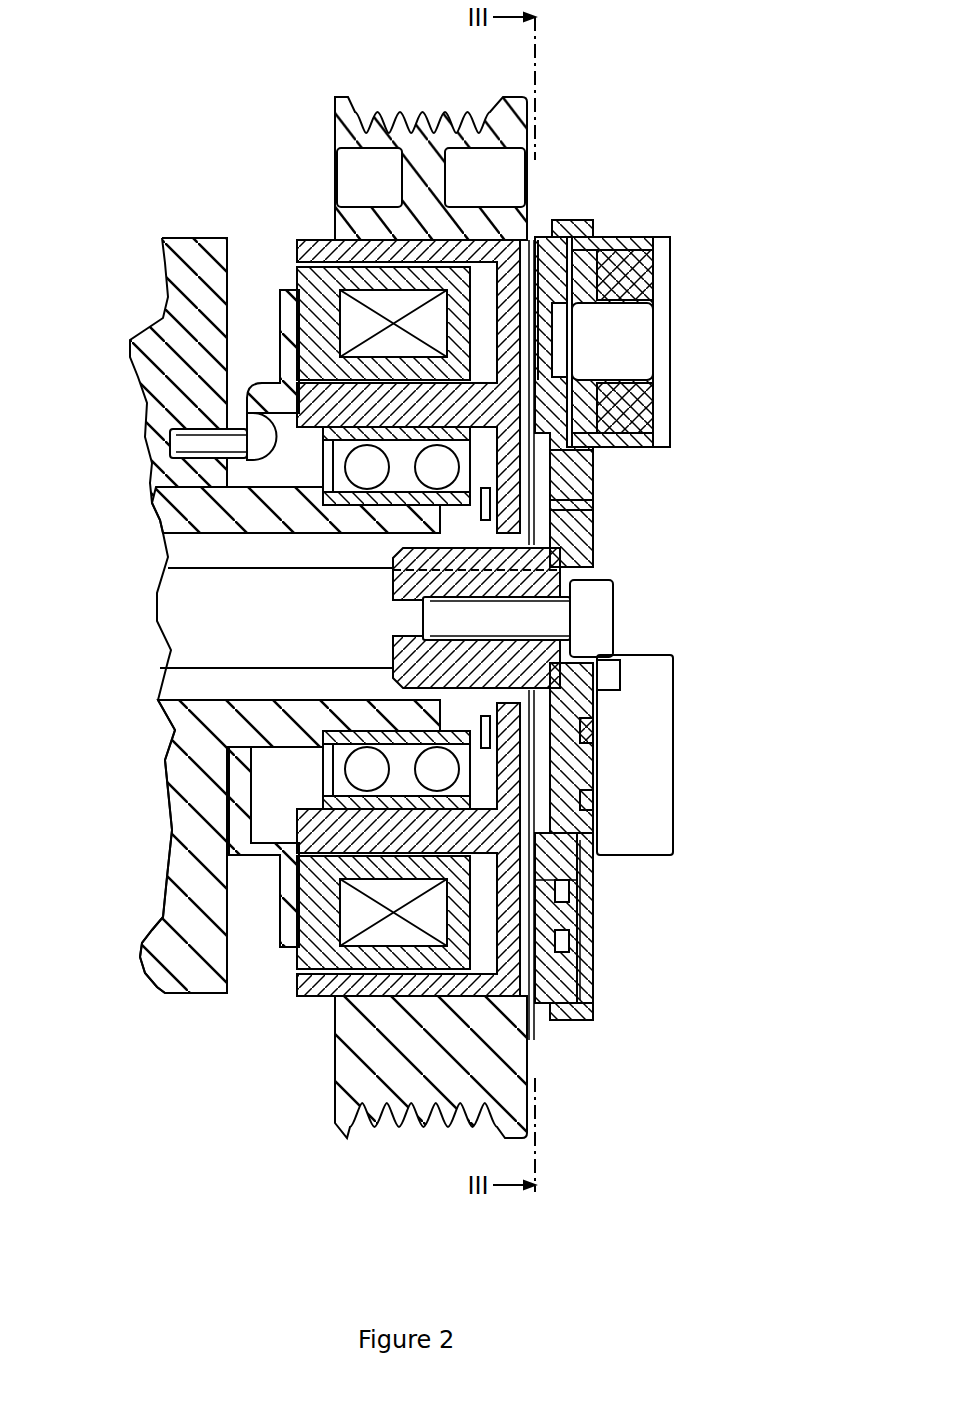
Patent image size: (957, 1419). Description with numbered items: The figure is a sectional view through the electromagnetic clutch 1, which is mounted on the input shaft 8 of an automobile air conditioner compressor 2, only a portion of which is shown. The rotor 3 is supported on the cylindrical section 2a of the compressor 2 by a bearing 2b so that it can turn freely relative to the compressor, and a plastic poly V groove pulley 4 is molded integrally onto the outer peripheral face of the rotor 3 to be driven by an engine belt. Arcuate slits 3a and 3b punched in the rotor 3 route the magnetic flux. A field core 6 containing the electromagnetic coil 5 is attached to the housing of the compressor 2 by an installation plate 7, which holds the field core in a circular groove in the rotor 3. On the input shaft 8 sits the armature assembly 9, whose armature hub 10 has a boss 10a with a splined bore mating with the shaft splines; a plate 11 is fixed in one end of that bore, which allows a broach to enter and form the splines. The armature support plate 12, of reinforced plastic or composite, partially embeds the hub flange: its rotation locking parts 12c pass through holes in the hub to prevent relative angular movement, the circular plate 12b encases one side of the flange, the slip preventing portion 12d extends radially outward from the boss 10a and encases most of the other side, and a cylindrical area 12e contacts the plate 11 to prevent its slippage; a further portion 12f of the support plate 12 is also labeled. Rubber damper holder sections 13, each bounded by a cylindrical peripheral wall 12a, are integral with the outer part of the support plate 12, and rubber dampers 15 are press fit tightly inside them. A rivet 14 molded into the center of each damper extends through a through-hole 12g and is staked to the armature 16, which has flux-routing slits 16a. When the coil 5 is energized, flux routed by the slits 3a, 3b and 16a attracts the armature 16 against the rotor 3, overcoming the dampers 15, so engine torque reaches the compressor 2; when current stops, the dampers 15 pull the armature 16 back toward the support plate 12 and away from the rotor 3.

The electromagnetic clutch 1 is at (637, 91).
The compressor 2 is at (180, 252).
The cylindrical section 2a is at (290, 520).
The bearing 2b is at (320, 495).
The rotor 3 is at (330, 238).
The slit 3a is at (593, 890).
The slit 3b is at (593, 992).
The poly V groove pulley 4 is at (345, 100).
The electromagnetic coil 5 is at (307, 345).
The field core 6 is at (273, 1027).
The installation plate 7 is at (300, 398).
The input shaft 8 is at (195, 616).
The armature assembly 9 is at (688, 485).
The armature hub 10 is at (533, 560).
The boss 10a is at (392, 548).
The plate 11 is at (613, 600).
The armature support plate 12 is at (600, 250).
The cylindrical peripheral wall 12a is at (642, 237).
The circular plate 12b is at (580, 513).
The rotation locking part 12c is at (580, 468).
The slip preventing portion 12d is at (600, 797).
The cylindrical area 12e is at (620, 667).
The upper edge portion 12f is at (560, 245).
The through-hole 12g is at (610, 232).
The rubber damper holder section 13 is at (685, 305).
The rivet 14 is at (630, 337).
The rubber damper 15 is at (662, 290).
The armature 16 is at (553, 258).
The slit 16a is at (590, 930).